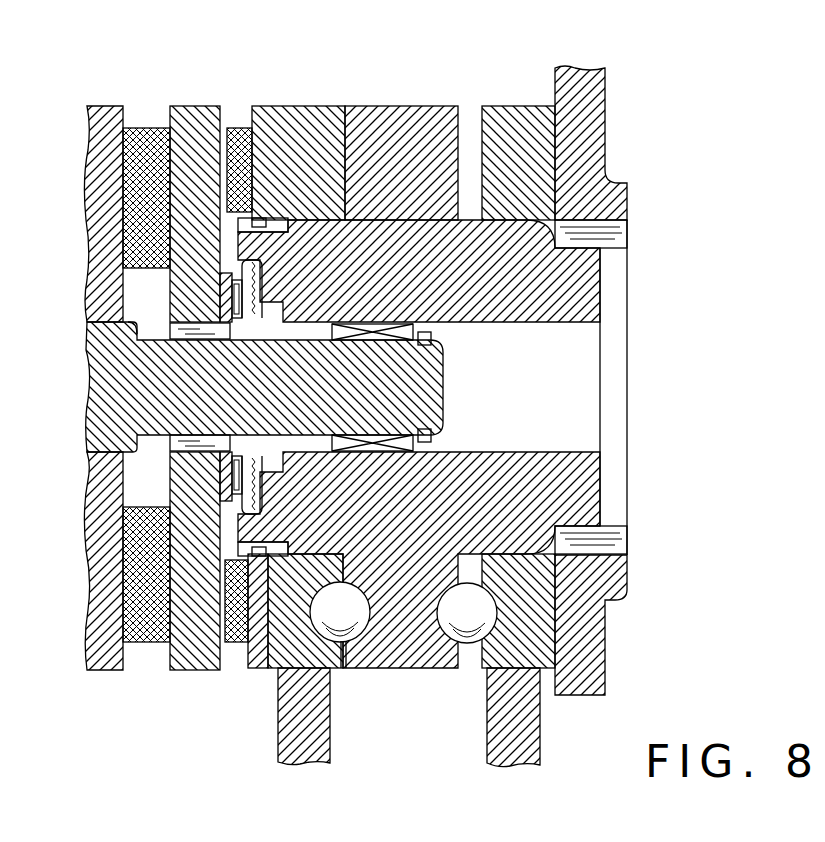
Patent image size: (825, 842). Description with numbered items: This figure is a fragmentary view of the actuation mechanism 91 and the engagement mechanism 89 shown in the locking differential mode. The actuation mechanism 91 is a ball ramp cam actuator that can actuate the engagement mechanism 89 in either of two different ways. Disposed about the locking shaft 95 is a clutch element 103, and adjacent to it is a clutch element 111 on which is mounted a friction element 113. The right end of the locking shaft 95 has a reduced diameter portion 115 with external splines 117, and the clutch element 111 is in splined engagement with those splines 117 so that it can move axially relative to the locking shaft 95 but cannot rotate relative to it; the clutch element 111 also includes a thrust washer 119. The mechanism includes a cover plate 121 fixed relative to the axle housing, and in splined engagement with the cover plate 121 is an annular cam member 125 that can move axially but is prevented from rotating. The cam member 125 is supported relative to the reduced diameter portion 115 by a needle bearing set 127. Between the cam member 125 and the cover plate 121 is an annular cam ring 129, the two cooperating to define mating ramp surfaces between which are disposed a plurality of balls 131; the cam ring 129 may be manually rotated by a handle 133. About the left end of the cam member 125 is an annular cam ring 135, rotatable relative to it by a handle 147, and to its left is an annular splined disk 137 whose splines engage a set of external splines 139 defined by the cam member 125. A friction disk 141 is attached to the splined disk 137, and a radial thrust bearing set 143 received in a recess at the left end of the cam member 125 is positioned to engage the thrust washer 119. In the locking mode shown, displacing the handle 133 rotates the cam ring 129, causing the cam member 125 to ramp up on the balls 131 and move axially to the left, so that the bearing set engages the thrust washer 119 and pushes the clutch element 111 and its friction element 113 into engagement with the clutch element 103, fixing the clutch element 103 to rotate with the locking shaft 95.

The engagement mechanism 89 is at (123, 683).
The actuation mechanism 91 is at (458, 86).
The locking shaft 95 is at (92, 415).
The clutch element 103 is at (107, 125).
The clutch element 111 is at (197, 120).
The friction element 113 is at (147, 135).
The reduced diameter portion 115 is at (445, 390).
The external splines 117 is at (137, 328).
The thrust washer 119 is at (198, 452).
The cover plate 121 is at (605, 128).
The cam member 125 is at (398, 120).
The needle bearing set 127 is at (372, 437).
The cam ring 129 is at (512, 125).
The balls 131 is at (466, 588).
The handle 133 is at (528, 712).
The cam ring 135 is at (315, 125).
The splined disk 137 is at (255, 655).
The external splines 139 is at (278, 228).
The friction disk 141 is at (242, 135).
The radial thrust bearing set 143 is at (212, 330).
The handle 147 is at (330, 700).